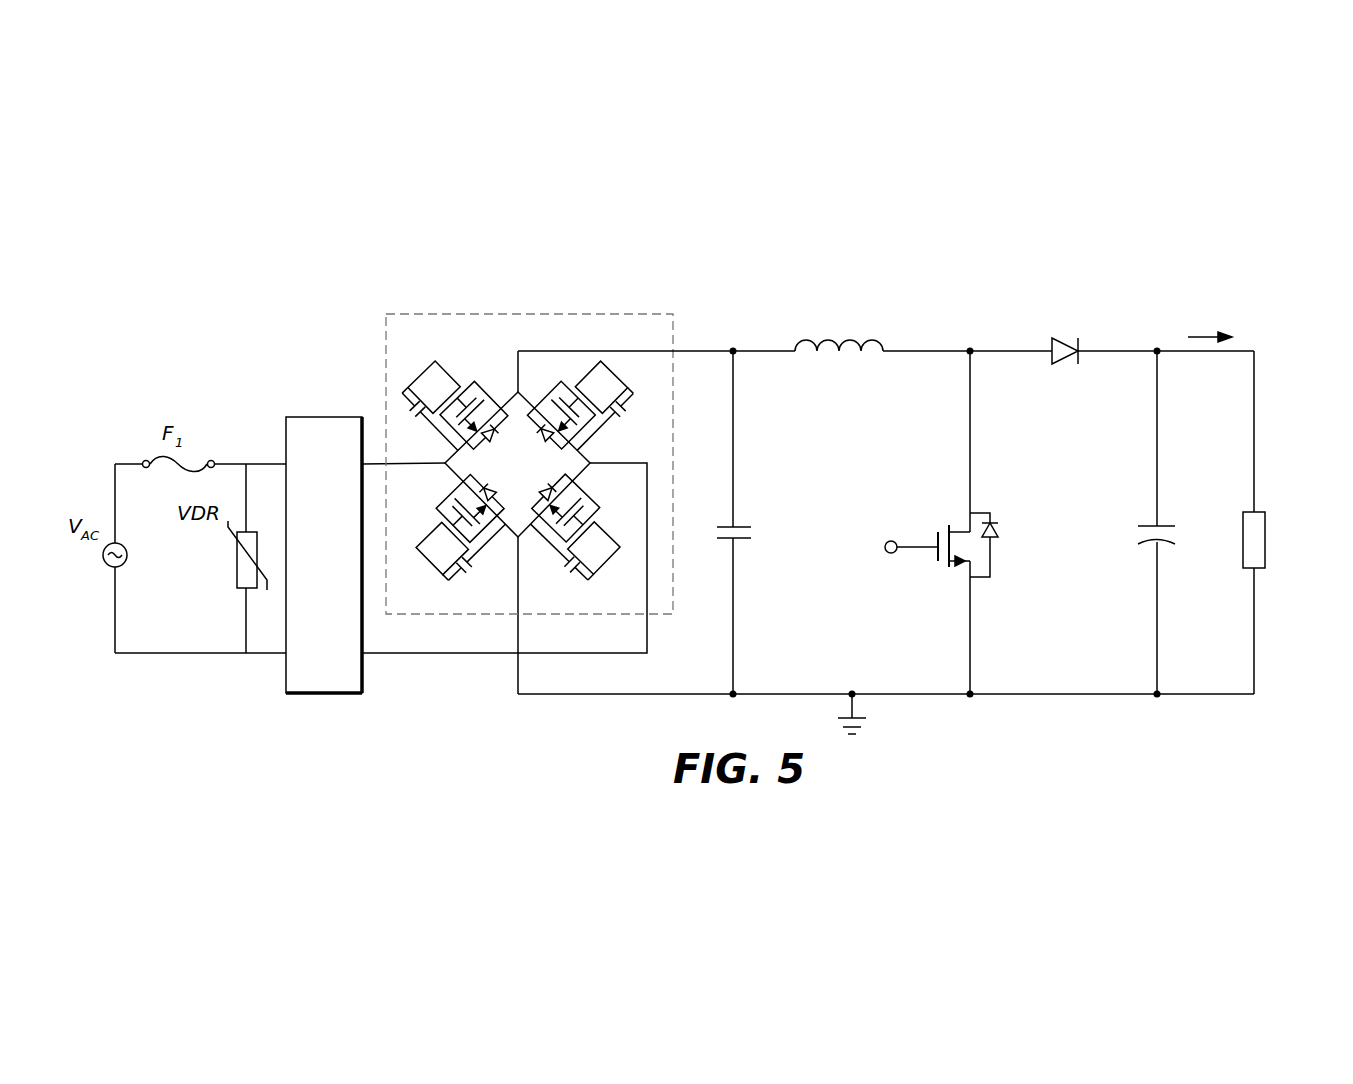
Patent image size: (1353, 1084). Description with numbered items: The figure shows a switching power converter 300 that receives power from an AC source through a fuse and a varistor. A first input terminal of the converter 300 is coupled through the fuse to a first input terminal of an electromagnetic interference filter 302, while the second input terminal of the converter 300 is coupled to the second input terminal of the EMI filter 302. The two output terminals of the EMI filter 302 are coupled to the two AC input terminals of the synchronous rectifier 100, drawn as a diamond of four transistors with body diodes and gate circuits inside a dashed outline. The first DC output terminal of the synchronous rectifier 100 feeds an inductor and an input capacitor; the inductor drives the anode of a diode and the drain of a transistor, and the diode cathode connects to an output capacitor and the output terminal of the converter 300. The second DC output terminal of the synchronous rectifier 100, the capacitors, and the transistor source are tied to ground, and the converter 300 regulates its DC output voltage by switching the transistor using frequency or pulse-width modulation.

The synchronous rectifier 100 is at (542, 313).
The switching power converter 300 is at (857, 241).
The electromagnetic interference (EMI) filter 302 is at (306, 417).